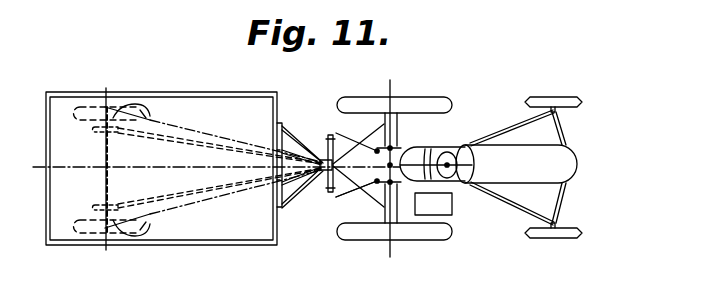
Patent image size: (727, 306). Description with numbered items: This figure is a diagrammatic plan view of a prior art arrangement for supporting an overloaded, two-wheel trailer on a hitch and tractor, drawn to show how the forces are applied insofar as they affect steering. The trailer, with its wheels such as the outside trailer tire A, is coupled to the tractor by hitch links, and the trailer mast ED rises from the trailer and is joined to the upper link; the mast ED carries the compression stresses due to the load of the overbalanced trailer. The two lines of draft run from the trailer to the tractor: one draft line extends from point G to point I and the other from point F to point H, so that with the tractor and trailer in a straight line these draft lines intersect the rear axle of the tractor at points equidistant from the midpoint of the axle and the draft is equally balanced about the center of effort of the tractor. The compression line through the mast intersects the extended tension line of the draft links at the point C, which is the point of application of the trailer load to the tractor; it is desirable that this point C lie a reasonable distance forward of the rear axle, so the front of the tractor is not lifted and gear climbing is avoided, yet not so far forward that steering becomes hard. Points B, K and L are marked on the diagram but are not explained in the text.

The outside trailer tire A is at (105, 216).
The upper end of pivot axis B is at (105, 119).
The point of application of the load C is at (462, 148).
The trailer mast ED is at (328, 193).
The end point of draft line FH F is at (149, 226).
The end point of draft line GI G is at (149, 112).
The end point of draft line FH at the tractor H is at (389, 146).
The end point of draft line GI at the tractor I is at (392, 185).
The pivot joints K is at (376, 149).
The lower steering lever L is at (376, 183).